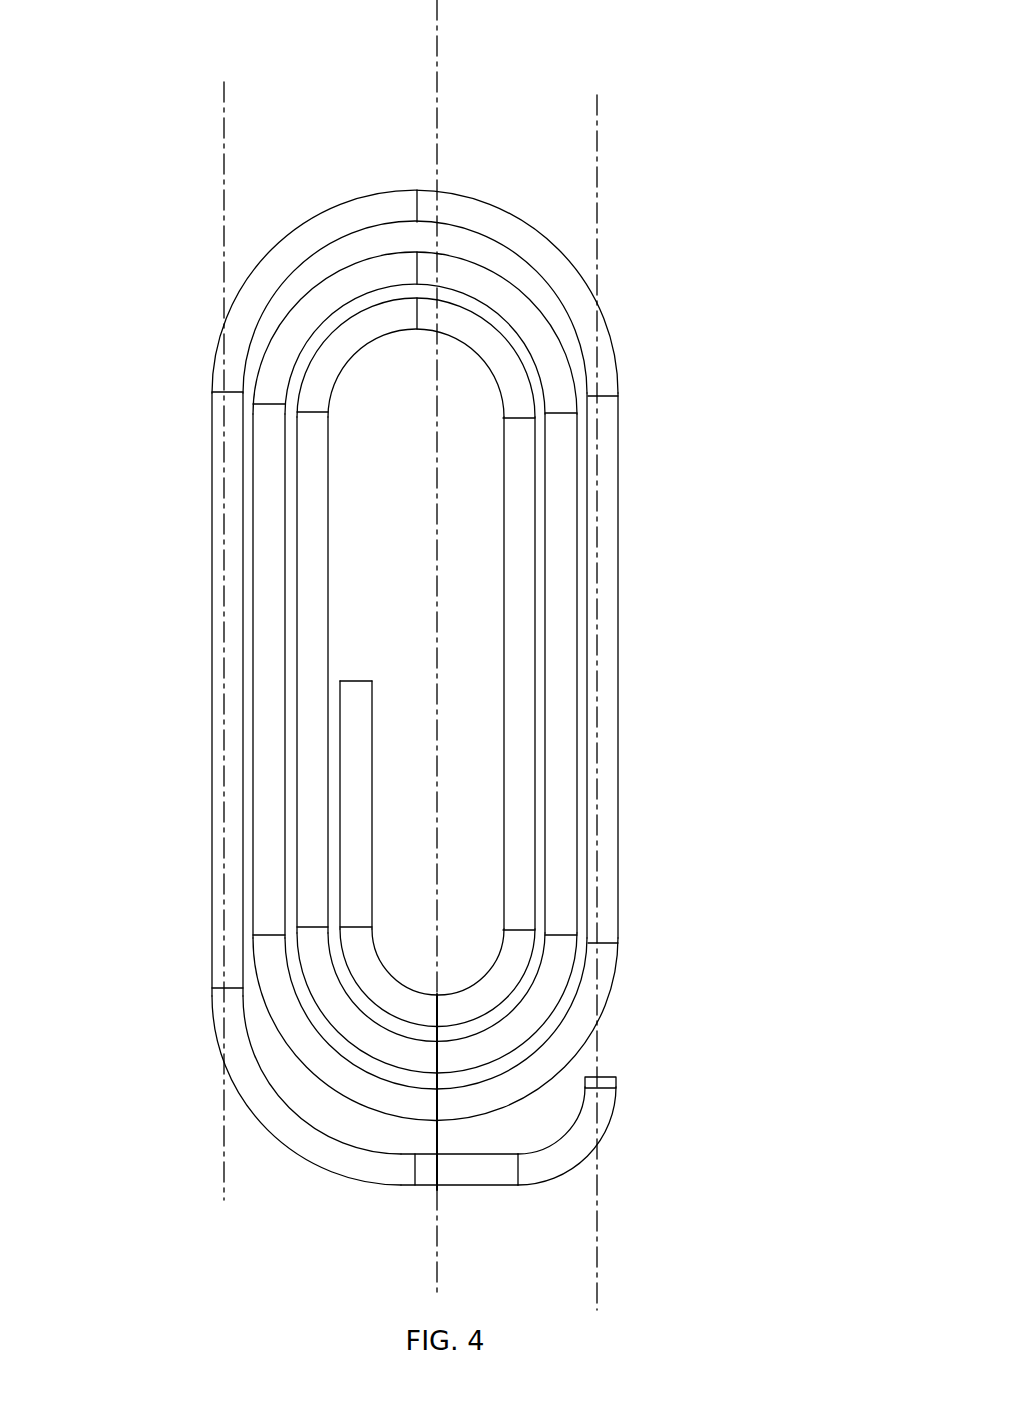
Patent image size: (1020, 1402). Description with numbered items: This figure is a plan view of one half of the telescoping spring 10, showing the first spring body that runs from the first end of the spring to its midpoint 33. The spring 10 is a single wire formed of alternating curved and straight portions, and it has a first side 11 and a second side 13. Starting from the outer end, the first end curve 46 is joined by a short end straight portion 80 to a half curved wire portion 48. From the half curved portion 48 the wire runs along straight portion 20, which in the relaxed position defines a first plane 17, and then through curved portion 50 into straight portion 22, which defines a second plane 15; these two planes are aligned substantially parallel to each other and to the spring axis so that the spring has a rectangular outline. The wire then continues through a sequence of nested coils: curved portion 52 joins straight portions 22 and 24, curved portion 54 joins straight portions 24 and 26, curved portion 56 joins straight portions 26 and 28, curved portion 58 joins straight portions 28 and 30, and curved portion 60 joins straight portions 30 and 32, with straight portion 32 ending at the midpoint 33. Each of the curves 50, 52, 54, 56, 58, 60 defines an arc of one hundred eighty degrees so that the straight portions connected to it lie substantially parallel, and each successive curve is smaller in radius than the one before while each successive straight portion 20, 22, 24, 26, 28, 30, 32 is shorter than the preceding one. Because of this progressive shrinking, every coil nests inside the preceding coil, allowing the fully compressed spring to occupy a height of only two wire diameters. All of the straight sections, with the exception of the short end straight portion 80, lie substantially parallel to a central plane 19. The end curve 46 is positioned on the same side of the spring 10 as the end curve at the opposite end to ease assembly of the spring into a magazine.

The telescoping spring 10 is at (183, 190).
The first side 11 is at (692, 237).
The second side 13 is at (690, 1130).
The second plane 15 is at (603, 180).
The first plane 17 is at (222, 120).
The central plane 19 is at (442, 68).
The straight portion 20 is at (210, 897).
The straight portion 22 is at (620, 470).
The straight portion 24 is at (250, 822).
The straight portion 26 is at (573, 570).
The straight portion 28 is at (292, 750).
The straight portion 30 is at (538, 678).
The straight portion 32 is at (339, 696).
The midpoint 33 is at (356, 681).
The first end curve 46 is at (598, 1145).
The half curved wire portion 48 is at (338, 1175).
The curved portion 50 is at (400, 196).
The curved portion 52 is at (330, 1095).
The curved portion 54 is at (370, 255).
The curved portion 56 is at (343, 1040).
The curved portion 58 is at (348, 318).
The curved portion 60 is at (352, 992).
The short end straight portion 80 is at (458, 1188).